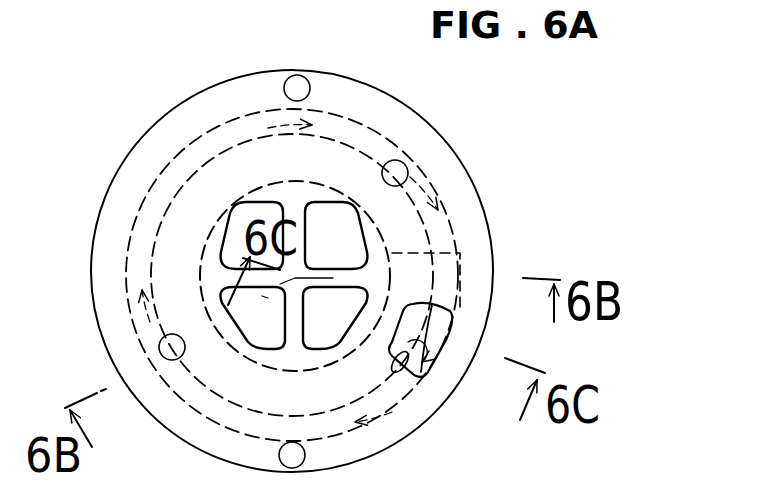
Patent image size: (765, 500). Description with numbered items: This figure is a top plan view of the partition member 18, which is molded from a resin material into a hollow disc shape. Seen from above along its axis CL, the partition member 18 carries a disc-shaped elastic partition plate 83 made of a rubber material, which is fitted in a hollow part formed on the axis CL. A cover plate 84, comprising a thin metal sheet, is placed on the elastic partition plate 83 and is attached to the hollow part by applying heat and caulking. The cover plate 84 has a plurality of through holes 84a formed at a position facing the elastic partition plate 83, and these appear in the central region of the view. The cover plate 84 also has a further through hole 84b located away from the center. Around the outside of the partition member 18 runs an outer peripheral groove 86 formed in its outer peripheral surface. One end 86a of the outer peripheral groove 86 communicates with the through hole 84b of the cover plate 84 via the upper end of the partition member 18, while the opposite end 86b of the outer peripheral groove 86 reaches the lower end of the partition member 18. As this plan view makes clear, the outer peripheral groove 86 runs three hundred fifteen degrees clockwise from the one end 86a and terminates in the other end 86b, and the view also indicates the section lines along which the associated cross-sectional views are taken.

The partition member 18 is at (573, 127).
The elastic partition plate 83 is at (271, 208).
The cover plate 84 is at (156, 155).
The through holes 84a is at (236, 330).
The through hole 84b is at (402, 370).
The outer peripheral groove 86 is at (257, 412).
The one end of the outer peripheral groove 86a is at (440, 352).
The other end of the outer peripheral groove 86b is at (440, 250).
The axis CL is at (295, 278).